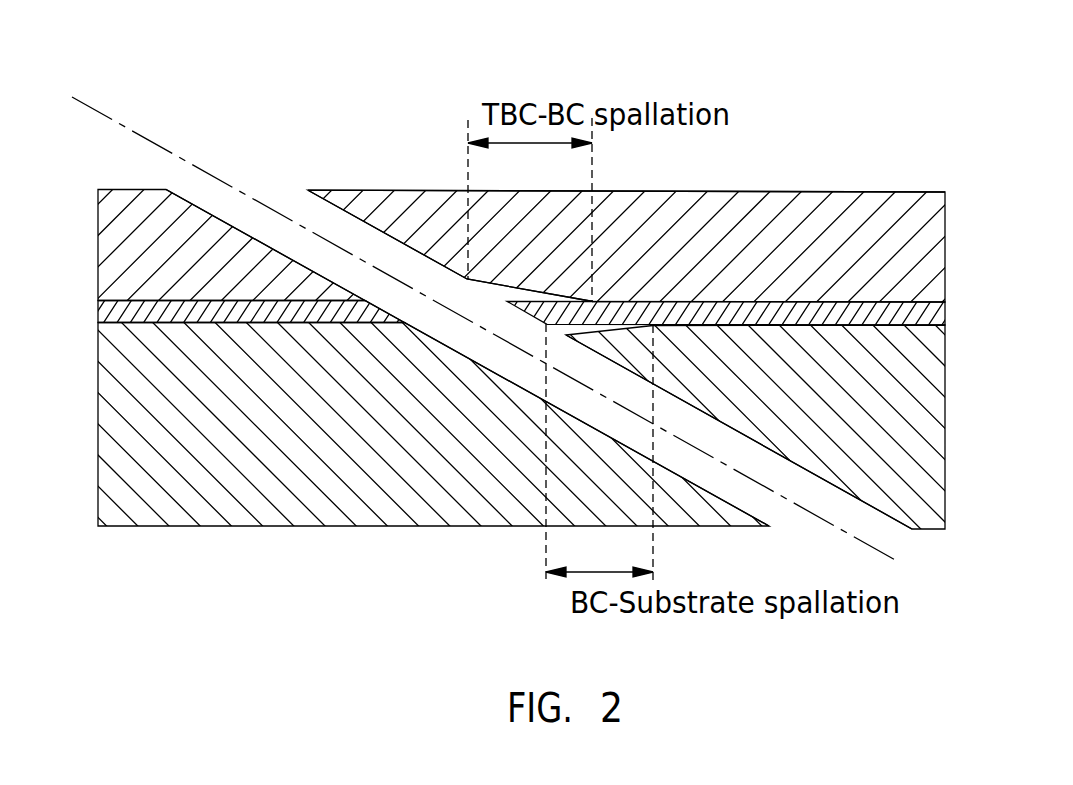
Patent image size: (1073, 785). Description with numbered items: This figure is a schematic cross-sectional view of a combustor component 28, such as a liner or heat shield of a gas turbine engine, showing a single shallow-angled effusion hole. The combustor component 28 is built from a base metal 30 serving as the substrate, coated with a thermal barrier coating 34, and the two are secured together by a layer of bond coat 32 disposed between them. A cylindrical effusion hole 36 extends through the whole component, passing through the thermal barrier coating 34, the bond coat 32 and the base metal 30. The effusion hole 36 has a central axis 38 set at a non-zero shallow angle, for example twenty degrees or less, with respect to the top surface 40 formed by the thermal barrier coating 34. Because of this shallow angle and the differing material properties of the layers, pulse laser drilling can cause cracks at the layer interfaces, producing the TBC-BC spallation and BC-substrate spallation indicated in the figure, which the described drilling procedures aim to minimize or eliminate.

The combustor component 28 is at (536, 303).
The base metal 30 is at (945, 419).
The bond coat 32 is at (933, 315).
The thermal barrier coating 34 is at (945, 252).
The effusion hole 36 is at (305, 205).
The central axis 38 is at (132, 128).
The top surface 40 is at (760, 191).